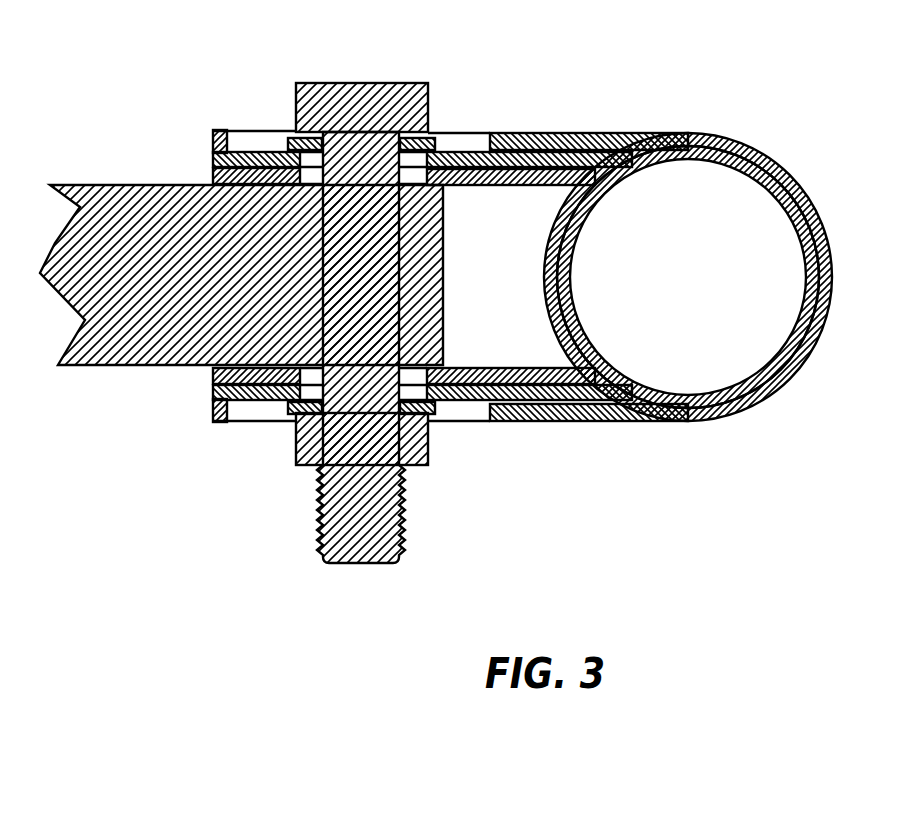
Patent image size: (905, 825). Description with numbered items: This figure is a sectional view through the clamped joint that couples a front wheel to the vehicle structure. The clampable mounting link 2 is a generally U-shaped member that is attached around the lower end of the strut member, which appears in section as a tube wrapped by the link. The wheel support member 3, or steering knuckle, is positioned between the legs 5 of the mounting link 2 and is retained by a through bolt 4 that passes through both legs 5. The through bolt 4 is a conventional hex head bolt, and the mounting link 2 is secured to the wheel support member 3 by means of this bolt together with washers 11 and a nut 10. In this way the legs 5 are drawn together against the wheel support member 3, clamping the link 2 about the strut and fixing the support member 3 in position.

The clampable mounting link 2 is at (580, 422).
The wheel support member 3 is at (173, 228).
The through bolt 4 is at (363, 113).
The legs 5 is at (263, 150).
The nut 10 is at (305, 467).
The washer 11 is at (430, 413).